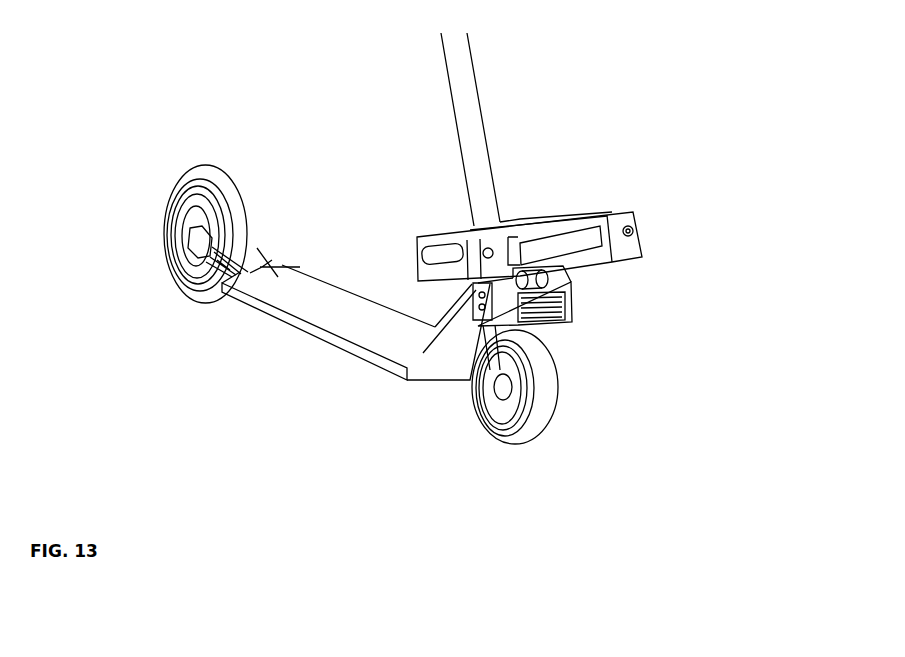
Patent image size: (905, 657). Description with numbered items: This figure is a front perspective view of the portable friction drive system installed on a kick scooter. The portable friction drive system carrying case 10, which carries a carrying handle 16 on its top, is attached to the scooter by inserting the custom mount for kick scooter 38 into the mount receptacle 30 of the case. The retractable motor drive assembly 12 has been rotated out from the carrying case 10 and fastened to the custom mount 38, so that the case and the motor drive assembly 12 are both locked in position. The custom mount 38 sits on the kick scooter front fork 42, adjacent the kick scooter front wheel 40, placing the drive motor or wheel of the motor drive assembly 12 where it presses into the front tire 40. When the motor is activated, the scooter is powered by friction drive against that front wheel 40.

The portable friction drive system carrying case 10 is at (658, 207).
The retractable motor drive assembly 12 is at (583, 305).
The carrying handle for portable friction drive system 16 is at (567, 218).
The mount receptacle 30 is at (472, 222).
The custom mount for kick scooter 38 is at (565, 268).
The kick scooter front wheel 40 is at (567, 387).
The kick scooter front fork 42 is at (457, 352).